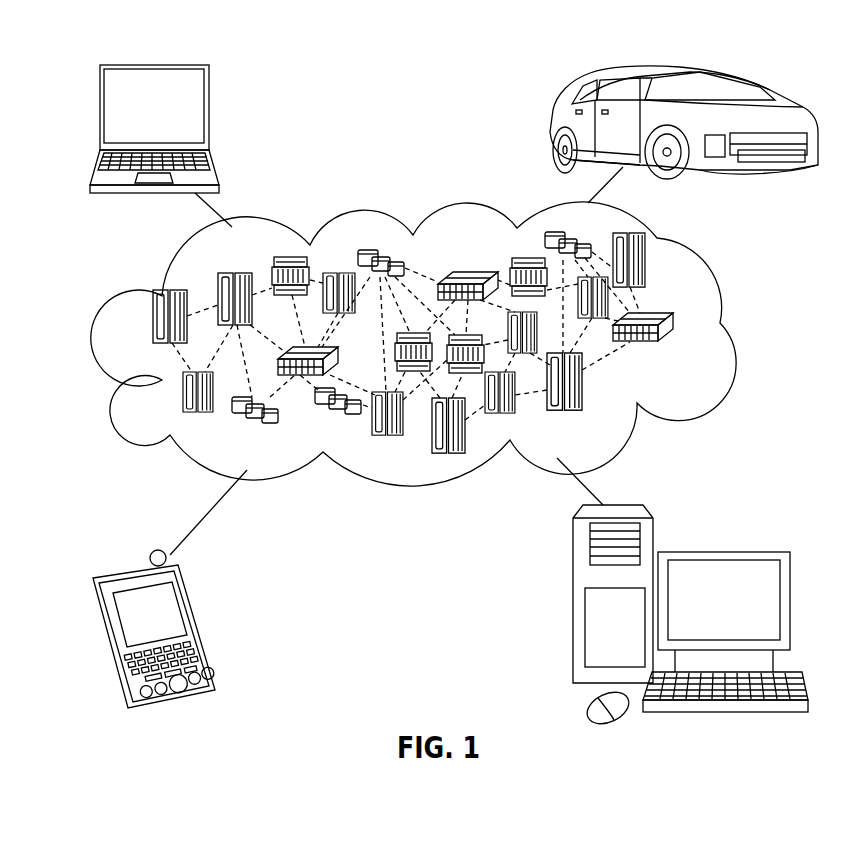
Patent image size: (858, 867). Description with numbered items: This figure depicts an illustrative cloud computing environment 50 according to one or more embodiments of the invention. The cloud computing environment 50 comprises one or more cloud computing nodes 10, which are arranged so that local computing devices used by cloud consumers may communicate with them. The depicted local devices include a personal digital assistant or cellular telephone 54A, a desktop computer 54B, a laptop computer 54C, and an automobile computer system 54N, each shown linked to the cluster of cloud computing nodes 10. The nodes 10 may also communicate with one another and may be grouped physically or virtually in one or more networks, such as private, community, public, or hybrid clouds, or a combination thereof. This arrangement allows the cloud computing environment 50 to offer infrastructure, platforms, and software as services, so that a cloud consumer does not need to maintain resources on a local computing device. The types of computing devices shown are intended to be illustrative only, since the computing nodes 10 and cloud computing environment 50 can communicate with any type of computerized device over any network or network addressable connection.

The computer system 10 is at (454, 397).
The network 50 is at (431, 344).
The handheld device 54A is at (178, 629).
The desktop computer 54B is at (690, 617).
The laptop computer 54C is at (180, 129).
The vehicle 54N is at (655, 122).